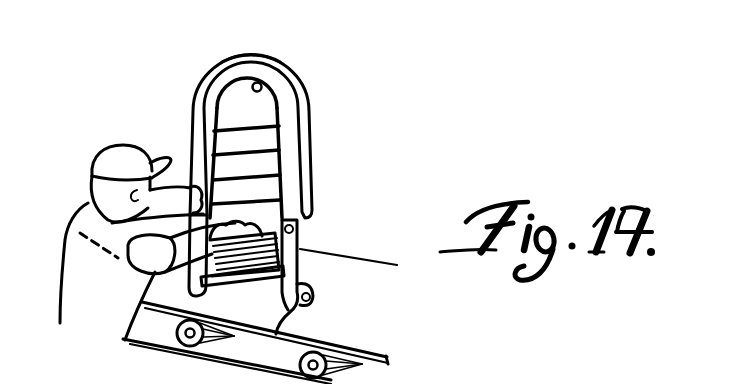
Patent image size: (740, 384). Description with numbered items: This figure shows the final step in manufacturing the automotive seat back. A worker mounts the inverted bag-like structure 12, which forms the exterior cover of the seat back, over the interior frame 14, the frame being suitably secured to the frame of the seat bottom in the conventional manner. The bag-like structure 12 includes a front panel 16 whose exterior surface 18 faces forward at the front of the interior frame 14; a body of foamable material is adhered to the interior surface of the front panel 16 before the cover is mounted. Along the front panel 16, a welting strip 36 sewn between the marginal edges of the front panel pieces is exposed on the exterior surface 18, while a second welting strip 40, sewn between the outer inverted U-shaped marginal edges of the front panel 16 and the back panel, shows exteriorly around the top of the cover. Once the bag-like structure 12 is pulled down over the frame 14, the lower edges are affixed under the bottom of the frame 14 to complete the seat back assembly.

The bag-like structure 12 is at (313, 95).
The interior frame 14 is at (297, 263).
The front panel 16 is at (287, 166).
The exterior surface 18 is at (236, 98).
The welting strip 36 is at (260, 83).
The welting strip 40 is at (230, 58).